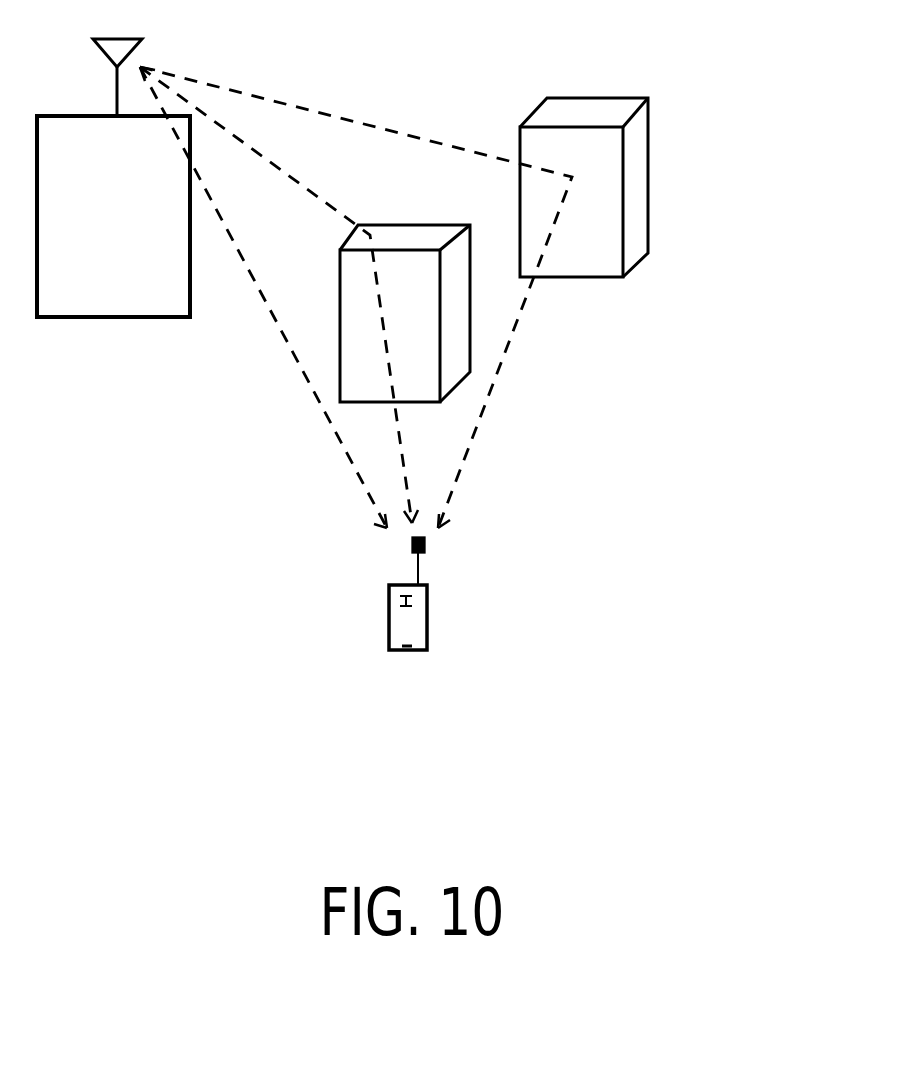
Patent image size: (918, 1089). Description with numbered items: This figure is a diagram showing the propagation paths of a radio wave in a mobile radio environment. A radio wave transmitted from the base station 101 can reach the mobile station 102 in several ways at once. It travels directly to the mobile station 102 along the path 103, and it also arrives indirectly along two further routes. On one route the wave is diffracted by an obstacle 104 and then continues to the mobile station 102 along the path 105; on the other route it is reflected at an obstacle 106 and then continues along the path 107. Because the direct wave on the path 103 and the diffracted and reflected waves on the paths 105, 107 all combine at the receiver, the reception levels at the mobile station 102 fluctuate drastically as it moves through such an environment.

The base station 101 is at (118, 318).
The mobile station 102 is at (428, 621).
The path 103 is at (320, 403).
The obstacle 104 is at (462, 350).
The path 105 is at (405, 427).
The obstacle 106 is at (648, 163).
The path 107 is at (513, 325).